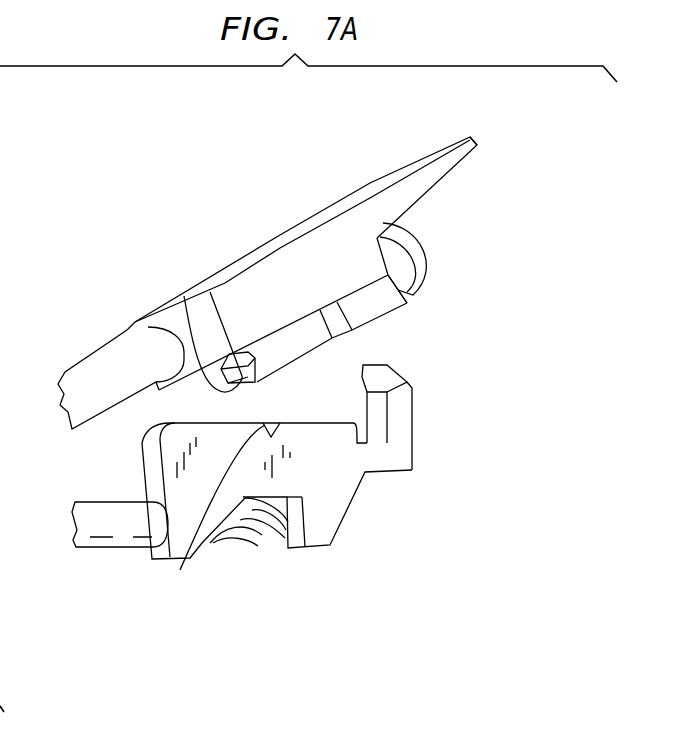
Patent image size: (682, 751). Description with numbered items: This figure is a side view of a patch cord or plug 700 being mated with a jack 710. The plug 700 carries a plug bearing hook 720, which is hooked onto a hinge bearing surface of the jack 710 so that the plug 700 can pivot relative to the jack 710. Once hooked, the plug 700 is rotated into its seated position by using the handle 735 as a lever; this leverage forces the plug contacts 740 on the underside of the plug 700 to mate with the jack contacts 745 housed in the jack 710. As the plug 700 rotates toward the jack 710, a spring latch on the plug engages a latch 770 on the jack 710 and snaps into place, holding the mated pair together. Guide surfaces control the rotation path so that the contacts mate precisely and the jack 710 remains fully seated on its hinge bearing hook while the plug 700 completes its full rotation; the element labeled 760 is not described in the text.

The plug 700 is at (273, 254).
The handle 735 is at (432, 178).
The plug bearing hook 720 is at (184, 296).
The plug contacts 740 is at (381, 314).
The latch 770 is at (400, 412).
The jack 710 is at (350, 512).
The jack contacts 745 is at (307, 453).
The spring 760 is at (180, 570).